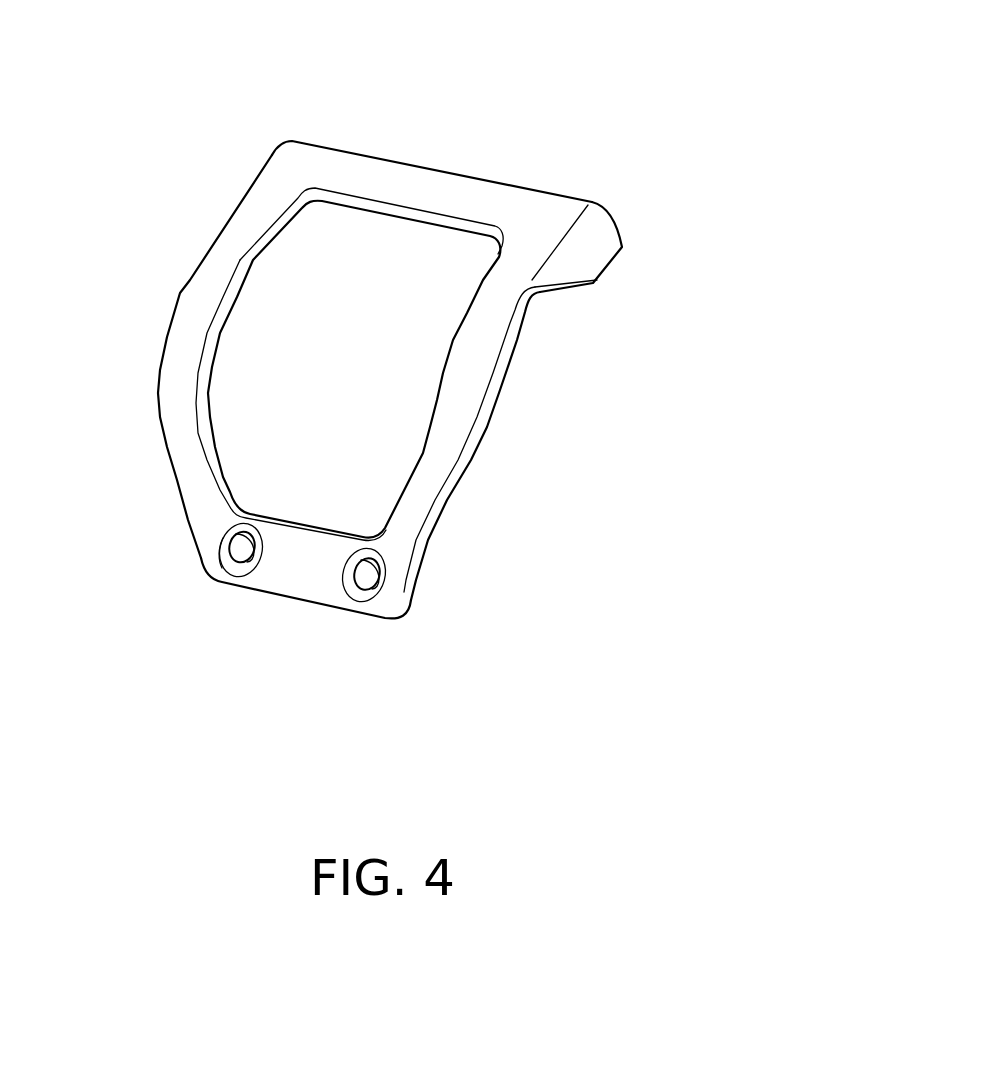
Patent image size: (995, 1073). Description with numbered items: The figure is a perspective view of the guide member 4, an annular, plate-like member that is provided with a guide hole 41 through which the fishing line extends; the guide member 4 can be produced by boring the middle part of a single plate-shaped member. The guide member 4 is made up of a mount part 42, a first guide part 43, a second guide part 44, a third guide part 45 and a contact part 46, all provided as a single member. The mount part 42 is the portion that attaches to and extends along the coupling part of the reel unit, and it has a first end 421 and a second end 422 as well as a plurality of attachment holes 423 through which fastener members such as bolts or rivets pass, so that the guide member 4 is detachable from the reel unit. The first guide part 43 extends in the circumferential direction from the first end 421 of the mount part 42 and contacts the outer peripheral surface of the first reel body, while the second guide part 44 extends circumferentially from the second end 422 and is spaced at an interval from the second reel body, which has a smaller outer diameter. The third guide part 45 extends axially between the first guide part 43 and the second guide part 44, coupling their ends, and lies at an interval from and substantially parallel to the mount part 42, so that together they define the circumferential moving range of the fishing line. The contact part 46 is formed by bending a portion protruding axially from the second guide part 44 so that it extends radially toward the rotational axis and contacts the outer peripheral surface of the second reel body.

The guide member 4 is at (632, 100).
The guide hole 41 is at (423, 450).
The mount part 42 is at (290, 580).
The first end 421 is at (248, 550).
The second end 422 is at (385, 607).
The attachment hole 423 is at (243, 540).
The first guide part 43 is at (192, 267).
The second guide part 44 is at (490, 383).
The third guide part 45 is at (405, 185).
The contact part 46 is at (590, 260).